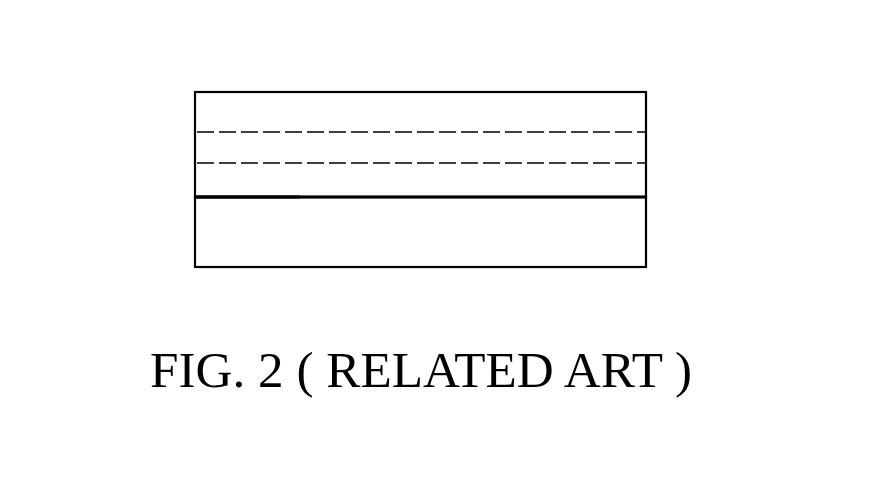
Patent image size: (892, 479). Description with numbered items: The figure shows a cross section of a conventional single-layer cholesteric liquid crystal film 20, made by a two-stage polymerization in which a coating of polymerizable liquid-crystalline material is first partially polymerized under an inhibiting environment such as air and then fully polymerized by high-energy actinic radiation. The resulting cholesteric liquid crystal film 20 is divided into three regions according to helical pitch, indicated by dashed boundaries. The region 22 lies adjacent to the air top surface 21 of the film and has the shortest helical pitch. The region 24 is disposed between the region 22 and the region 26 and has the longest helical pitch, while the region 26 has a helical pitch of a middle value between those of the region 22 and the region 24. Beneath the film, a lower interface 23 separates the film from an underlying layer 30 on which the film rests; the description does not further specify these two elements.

The cholesteric liquid crystal film 20 is at (735, 92).
The air top surface 21 is at (227, 92).
The region adjacent to the air top surface 22 is at (646, 111).
The interface between stack and substrate 23 is at (227, 196).
The region between region 22 and region 26 24 is at (646, 146).
The region with middle helical pitch 26 is at (646, 179).
The substrate 30 is at (646, 229).